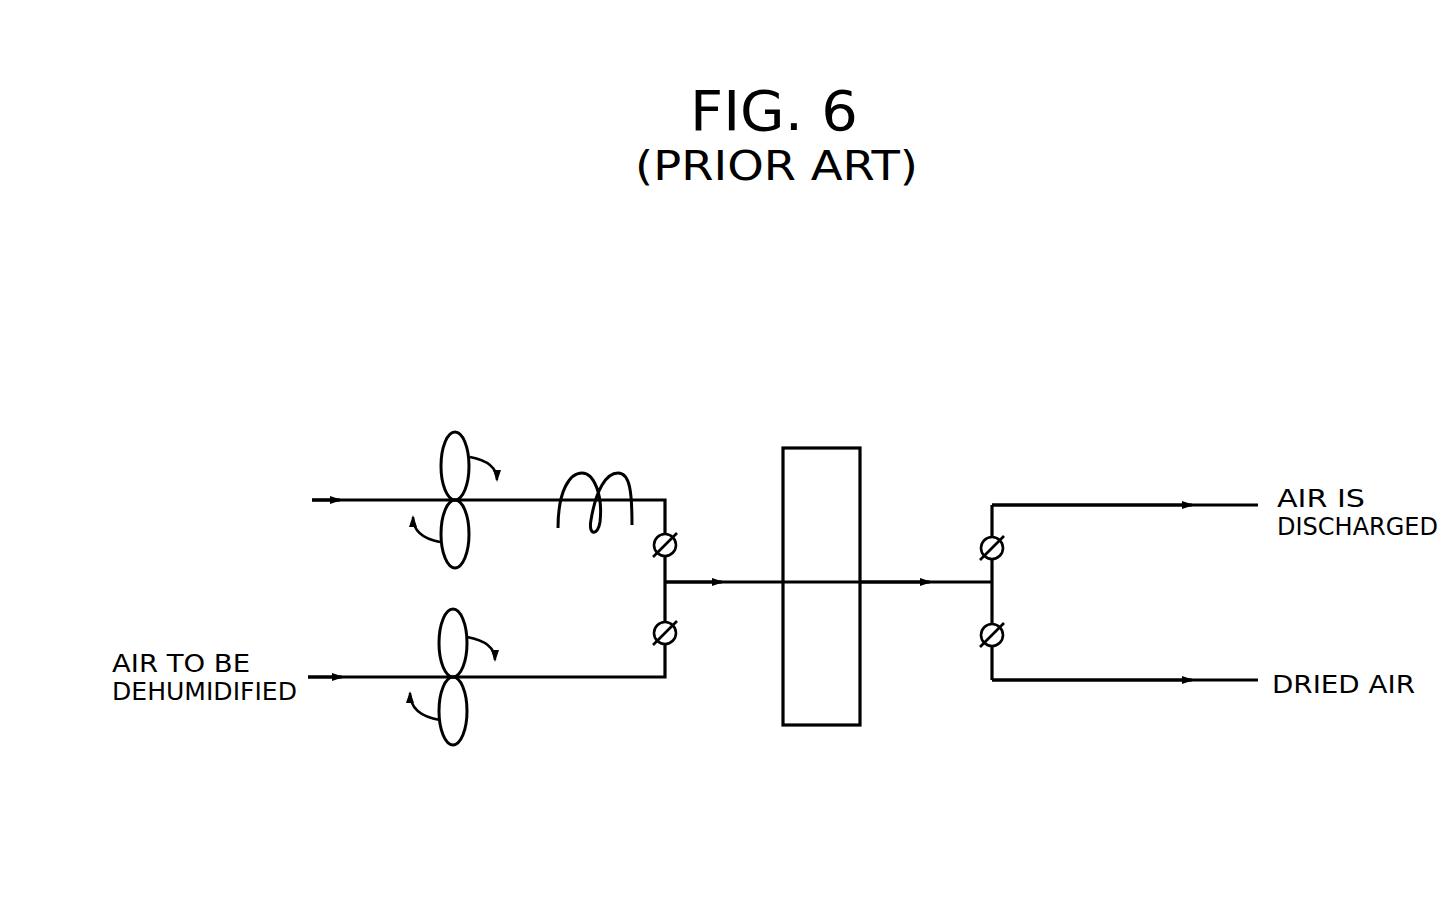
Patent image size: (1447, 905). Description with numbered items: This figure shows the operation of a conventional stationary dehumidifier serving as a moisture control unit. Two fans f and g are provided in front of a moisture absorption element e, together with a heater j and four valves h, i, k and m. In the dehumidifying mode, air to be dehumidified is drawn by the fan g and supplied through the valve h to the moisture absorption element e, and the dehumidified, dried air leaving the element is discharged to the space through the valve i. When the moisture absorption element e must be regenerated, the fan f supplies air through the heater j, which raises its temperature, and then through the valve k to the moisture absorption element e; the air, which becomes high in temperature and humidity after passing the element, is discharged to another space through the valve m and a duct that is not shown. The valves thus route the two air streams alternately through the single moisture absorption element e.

The fan f is at (443, 458).
The fan g is at (457, 718).
The heater j is at (623, 480).
The valve k is at (677, 540).
The valve h is at (677, 647).
The valve m is at (980, 540).
The valve i is at (983, 647).
The moisture absorption element e is at (857, 487).